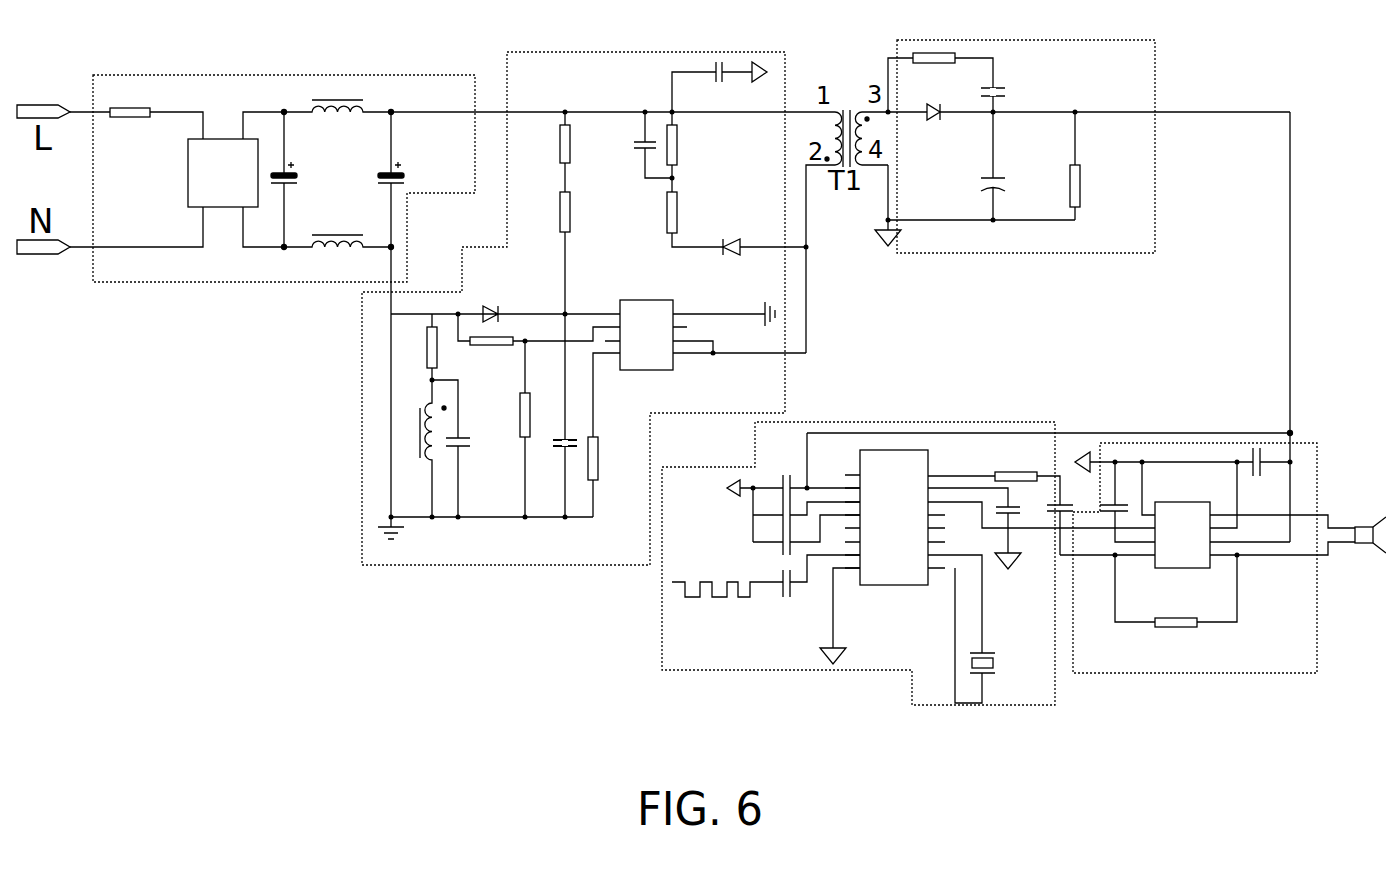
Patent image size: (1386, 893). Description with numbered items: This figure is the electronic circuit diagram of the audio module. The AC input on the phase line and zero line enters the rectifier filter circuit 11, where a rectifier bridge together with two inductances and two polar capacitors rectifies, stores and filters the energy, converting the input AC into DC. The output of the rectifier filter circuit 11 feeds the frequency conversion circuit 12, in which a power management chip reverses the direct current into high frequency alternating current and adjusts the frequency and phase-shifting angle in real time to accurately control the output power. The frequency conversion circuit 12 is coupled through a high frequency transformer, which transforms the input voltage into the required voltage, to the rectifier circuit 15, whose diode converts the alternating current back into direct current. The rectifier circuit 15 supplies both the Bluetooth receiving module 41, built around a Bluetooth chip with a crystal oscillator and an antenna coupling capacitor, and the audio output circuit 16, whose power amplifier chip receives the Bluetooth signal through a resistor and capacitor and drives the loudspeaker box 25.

The rectifier filter circuit 11 is at (272, 156).
The frequency conversion circuit 12 is at (598, 284).
The rectifier circuit 15 is at (1082, 126).
The audio output circuit 16 is at (1207, 591).
The Bluetooth receiving module 41 is at (907, 573).
The loudspeaker box 25 is at (1357, 542).